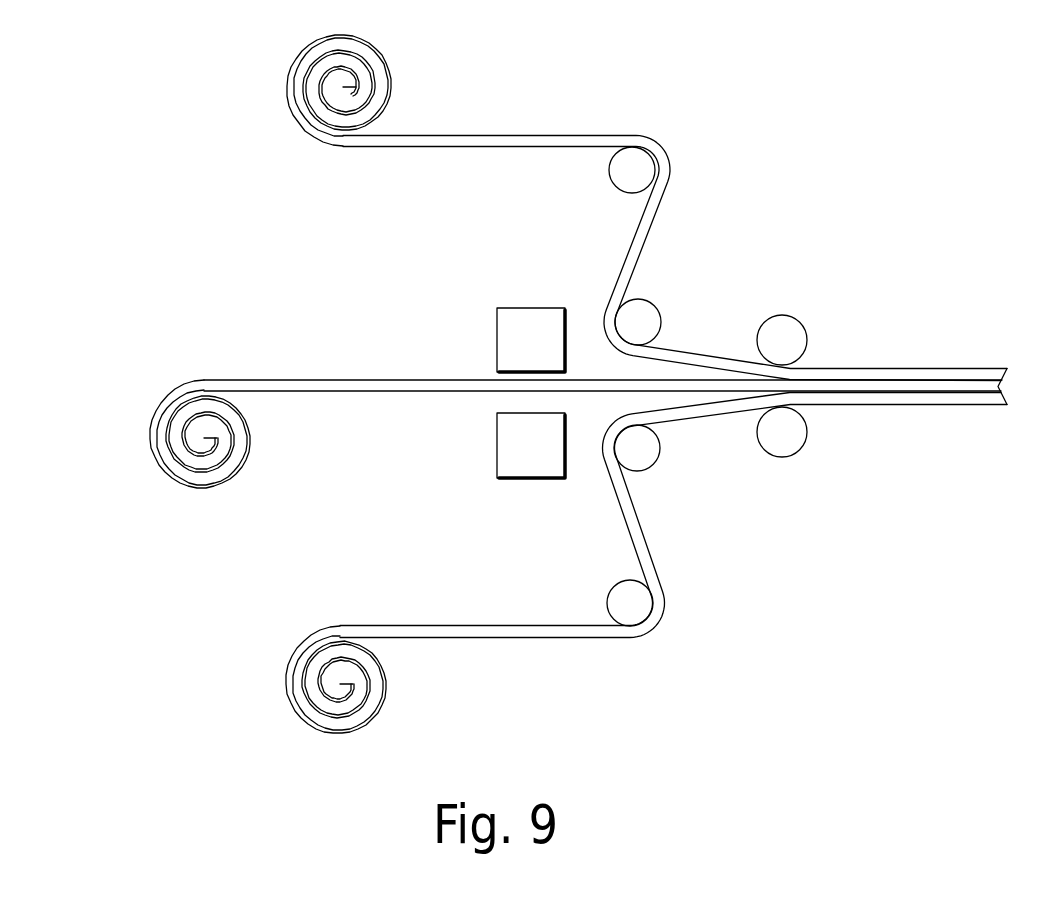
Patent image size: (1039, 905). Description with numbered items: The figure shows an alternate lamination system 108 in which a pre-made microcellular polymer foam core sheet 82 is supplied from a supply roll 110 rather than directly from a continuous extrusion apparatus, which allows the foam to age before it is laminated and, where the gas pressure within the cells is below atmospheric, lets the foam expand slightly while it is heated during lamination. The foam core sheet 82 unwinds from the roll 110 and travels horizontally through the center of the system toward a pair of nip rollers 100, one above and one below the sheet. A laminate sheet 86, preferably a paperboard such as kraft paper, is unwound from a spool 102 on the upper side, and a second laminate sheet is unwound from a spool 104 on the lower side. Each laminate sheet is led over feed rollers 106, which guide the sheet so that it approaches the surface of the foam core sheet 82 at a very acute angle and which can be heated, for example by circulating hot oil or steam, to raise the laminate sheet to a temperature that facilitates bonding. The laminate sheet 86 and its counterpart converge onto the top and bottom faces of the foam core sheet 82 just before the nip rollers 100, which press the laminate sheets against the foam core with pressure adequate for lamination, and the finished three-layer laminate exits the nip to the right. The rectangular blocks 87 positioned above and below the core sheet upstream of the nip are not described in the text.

The sheet 82 is at (420, 393).
The laminate sheet 86 is at (695, 353).
The adhesive applicator blocks 87 is at (522, 308).
The nip rollers 100 is at (793, 338).
The spool 102 is at (378, 110).
The spool 104 is at (375, 703).
The feed rollers 106 is at (616, 173).
The lamination system 108 is at (207, 186).
The central web supply roll 110 is at (170, 403).